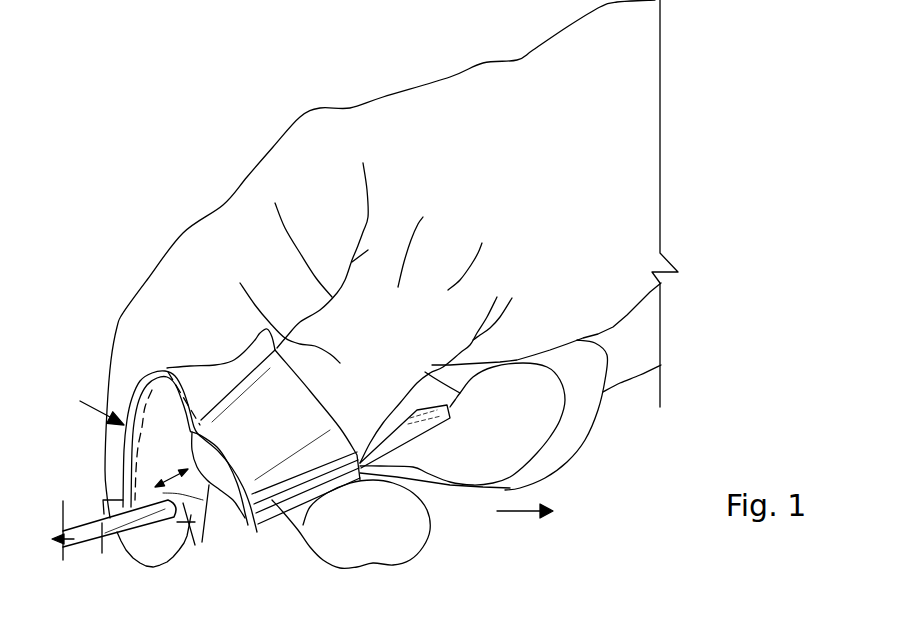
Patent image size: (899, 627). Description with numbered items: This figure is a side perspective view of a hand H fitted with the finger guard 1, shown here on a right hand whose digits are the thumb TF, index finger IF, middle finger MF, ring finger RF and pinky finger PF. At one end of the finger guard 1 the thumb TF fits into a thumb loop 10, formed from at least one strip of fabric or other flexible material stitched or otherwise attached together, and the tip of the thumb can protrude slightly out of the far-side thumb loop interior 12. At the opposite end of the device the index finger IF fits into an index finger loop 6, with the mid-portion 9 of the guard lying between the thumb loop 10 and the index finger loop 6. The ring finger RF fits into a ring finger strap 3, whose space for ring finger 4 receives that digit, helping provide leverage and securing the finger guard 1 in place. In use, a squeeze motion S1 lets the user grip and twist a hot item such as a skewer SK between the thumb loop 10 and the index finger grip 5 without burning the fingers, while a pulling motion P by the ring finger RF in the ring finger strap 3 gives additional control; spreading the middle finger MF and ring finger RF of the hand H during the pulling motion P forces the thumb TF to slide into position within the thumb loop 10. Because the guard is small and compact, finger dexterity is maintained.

The finger guard 1 is at (93, 406).
The ring finger strap 3 is at (443, 480).
The space for ring finger 4 is at (414, 461).
The index finger grip 5 is at (192, 537).
The index finger loop 6 is at (108, 502).
The mid-portion 9 is at (195, 369).
The thumb loop 10 is at (252, 427).
The thumb loop interior 12 is at (247, 492).
The hand H is at (470, 154).
The index finger IF is at (125, 385).
The middle finger MF is at (385, 530).
The ring finger RF is at (507, 438).
The pinky finger PF is at (571, 423).
The thumb TF is at (229, 483).
The skewer SK is at (82, 539).
The squeeze motion S1 is at (177, 475).
The pulling motion P is at (518, 514).